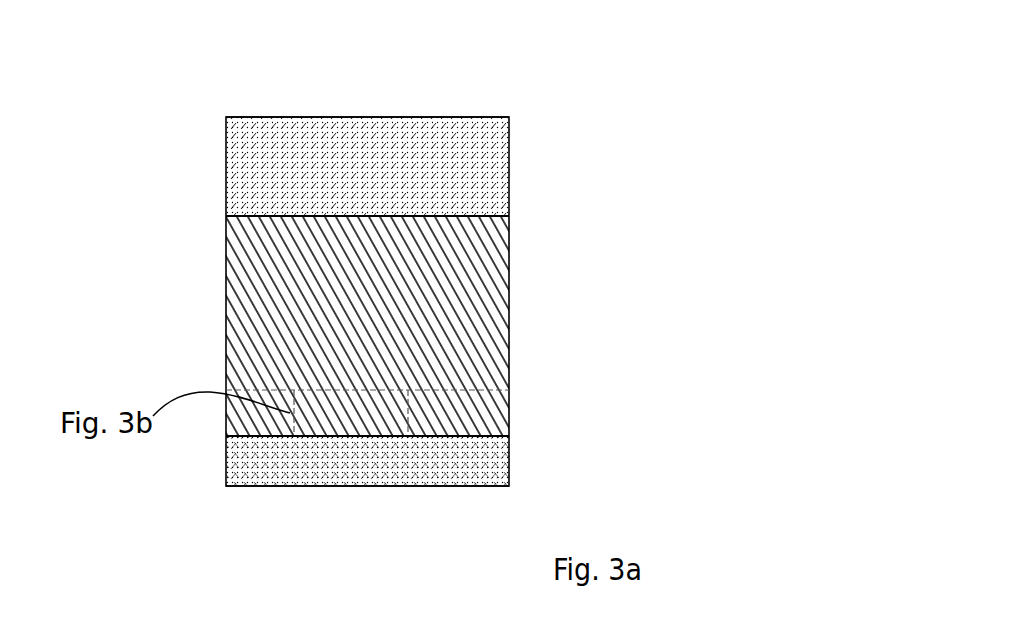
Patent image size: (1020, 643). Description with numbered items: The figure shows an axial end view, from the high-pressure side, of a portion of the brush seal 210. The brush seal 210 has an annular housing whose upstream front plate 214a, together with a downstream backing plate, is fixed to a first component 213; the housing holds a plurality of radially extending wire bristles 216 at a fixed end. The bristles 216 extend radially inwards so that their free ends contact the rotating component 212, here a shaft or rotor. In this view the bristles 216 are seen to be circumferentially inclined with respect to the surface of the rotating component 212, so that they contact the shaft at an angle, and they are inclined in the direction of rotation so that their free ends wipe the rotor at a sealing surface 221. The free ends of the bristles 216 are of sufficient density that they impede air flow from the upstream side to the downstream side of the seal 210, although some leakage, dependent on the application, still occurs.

The brush seal 210 is at (563, 97).
The first component 213 is at (383, 77).
The front plate 214a is at (410, 185).
The wire bristles 216 is at (465, 302).
The sealing surface 221 is at (465, 438).
The rotating component 212 is at (342, 485).